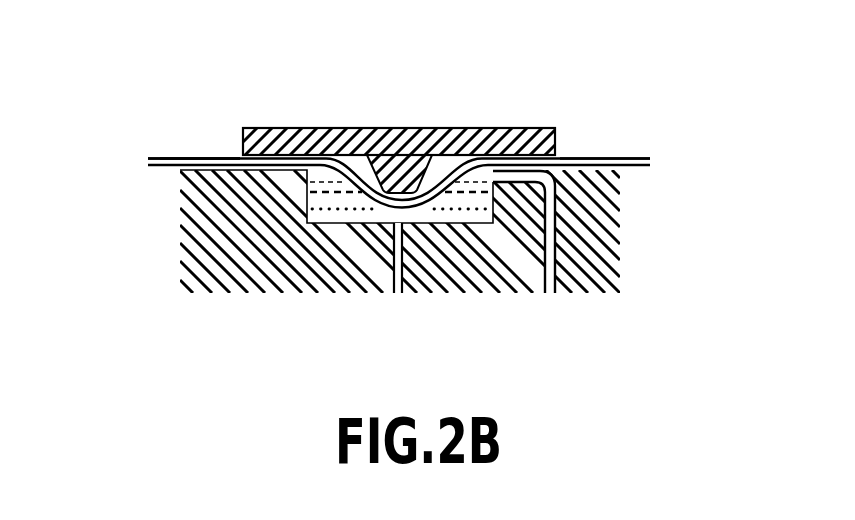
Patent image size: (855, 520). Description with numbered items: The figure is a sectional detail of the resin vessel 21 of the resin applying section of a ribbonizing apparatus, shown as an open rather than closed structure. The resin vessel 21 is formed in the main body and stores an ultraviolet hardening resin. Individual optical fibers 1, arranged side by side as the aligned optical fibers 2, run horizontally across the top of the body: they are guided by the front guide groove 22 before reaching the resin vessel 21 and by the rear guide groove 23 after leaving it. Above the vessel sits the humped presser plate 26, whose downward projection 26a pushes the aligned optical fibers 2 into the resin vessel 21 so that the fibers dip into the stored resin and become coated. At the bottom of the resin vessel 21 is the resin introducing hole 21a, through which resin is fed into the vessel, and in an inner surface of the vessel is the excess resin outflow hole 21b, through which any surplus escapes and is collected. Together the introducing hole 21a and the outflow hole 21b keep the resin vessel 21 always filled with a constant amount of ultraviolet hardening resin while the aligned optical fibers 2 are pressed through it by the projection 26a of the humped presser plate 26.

The optical fiber 1 is at (650, 163).
The aligned optical fibers 2 is at (148, 163).
The resin vessel 21 is at (305, 191).
The resin introducing hole 21a is at (393, 278).
The excess resin outflow hole 21b is at (556, 243).
The front guide groove 22 is at (587, 157).
The rear guide groove 23 is at (210, 158).
The humped presser plate 26 is at (515, 128).
The projection 26a is at (403, 128).